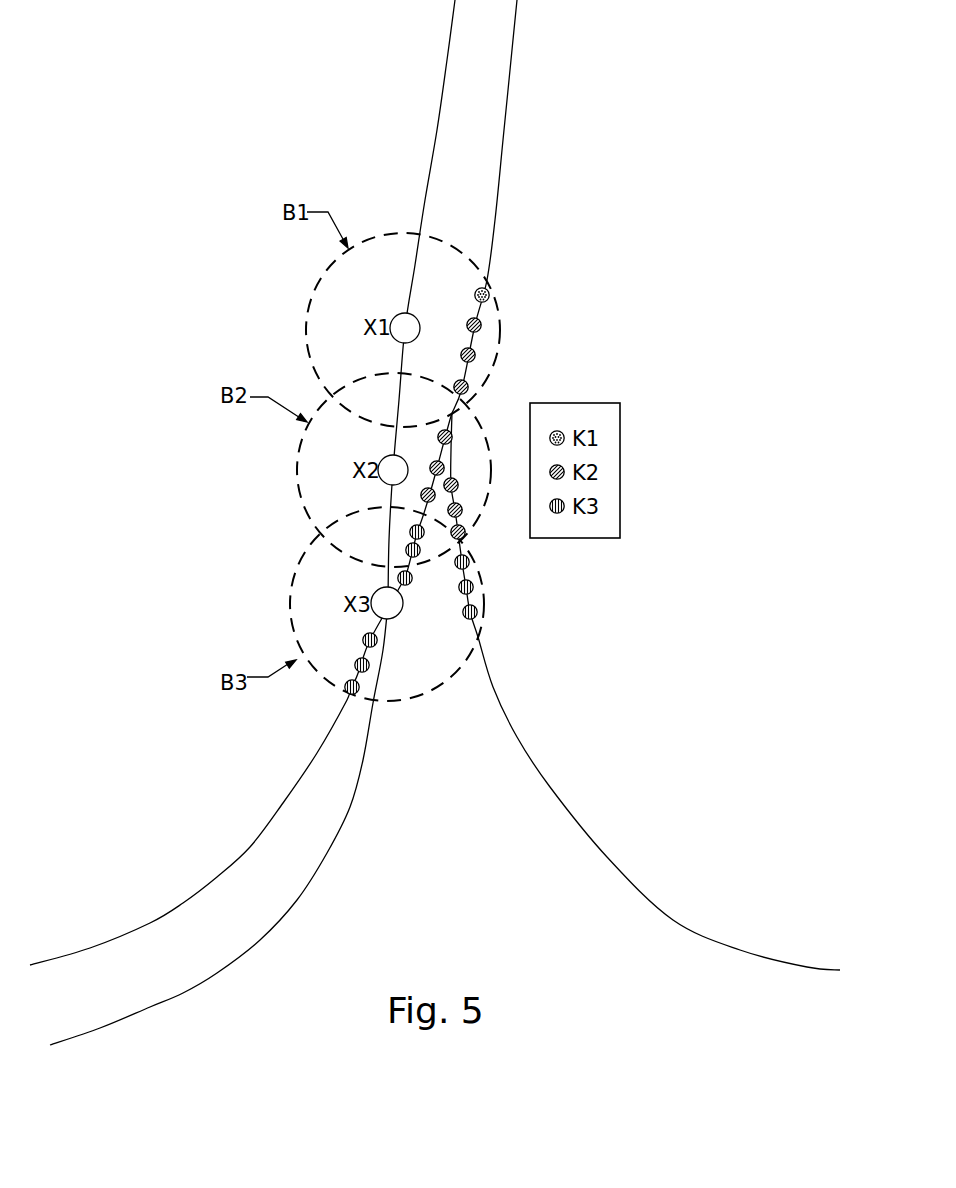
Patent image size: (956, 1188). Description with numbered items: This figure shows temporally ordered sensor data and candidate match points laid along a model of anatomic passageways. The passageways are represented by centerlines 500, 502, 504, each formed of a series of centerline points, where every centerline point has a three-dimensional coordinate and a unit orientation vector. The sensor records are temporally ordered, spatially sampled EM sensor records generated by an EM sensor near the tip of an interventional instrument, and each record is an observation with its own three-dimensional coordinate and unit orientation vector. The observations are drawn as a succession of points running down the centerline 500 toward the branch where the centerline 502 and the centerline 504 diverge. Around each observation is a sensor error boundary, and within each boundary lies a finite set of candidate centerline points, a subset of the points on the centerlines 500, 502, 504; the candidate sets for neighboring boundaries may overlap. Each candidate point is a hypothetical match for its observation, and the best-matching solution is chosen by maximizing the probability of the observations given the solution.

The centerline 500 is at (513, 59).
The centerline 502 is at (607, 857).
The centerline 504 is at (223, 864).